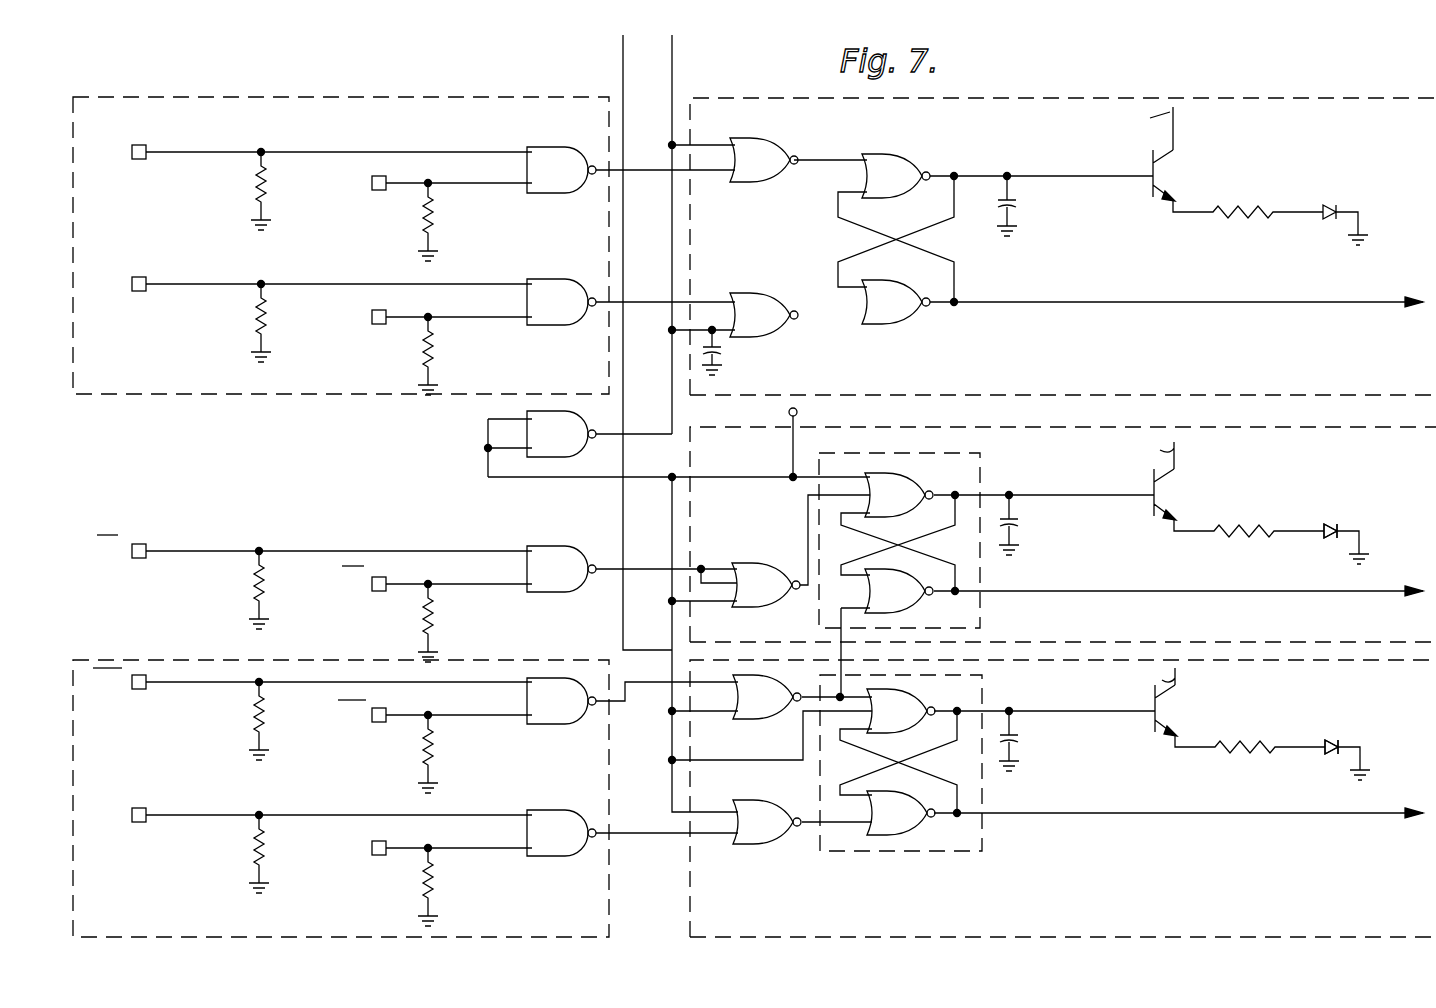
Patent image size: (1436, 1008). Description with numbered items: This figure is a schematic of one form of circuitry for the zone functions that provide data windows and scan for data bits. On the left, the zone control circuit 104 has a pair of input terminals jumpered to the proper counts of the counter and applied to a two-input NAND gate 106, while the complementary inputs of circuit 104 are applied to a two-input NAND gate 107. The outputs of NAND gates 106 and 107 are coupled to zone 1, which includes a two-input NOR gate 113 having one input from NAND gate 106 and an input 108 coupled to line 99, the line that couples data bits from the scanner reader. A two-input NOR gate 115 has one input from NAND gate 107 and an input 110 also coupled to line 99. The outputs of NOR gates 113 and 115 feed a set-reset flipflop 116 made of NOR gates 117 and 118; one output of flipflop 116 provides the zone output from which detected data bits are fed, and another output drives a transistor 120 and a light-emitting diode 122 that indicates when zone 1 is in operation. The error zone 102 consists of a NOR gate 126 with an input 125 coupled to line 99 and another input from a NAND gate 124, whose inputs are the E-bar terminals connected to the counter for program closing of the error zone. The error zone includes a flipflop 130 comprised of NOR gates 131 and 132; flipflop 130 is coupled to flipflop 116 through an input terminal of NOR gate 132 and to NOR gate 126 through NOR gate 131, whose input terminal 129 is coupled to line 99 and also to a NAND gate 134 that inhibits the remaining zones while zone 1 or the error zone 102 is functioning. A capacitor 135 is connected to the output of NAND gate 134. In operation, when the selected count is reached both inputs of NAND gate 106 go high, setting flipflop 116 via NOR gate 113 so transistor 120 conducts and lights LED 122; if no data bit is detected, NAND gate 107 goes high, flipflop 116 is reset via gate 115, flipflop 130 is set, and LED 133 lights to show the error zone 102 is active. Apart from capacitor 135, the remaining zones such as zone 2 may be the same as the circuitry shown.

The line 99 is at (623, 57).
The zone 2 is at (1340, 98).
The zone control circuit 104 is at (150, 395).
The error zone 102 is at (1337, 427).
The zone 1 is at (1305, 938).
The capacitor 135 is at (733, 350).
The NAND gate 134 is at (556, 455).
The NAND gate 124 is at (553, 592).
The NOR gate 126 is at (750, 565).
The input 125 is at (737, 603).
The input terminal 129 is at (845, 477).
The NOR gate 131 is at (905, 477).
The NOR gate 132 is at (905, 607).
The flipflop 130 is at (949, 575).
The LED 133 is at (1322, 537).
The transistor 120 is at (1147, 720).
The light-emitting diode 122 is at (1325, 752).
The NAND gate 107 is at (553, 724).
The NAND gate 106 is at (553, 856).
The input 110 is at (727, 718).
The NOR gate 115 is at (783, 712).
The input 108 is at (708, 812).
The NOR gate 113 is at (775, 848).
The NOR gate 117 is at (908, 737).
The NOR gate 118 is at (913, 828).
The set-reset flipflop 116 is at (901, 788).